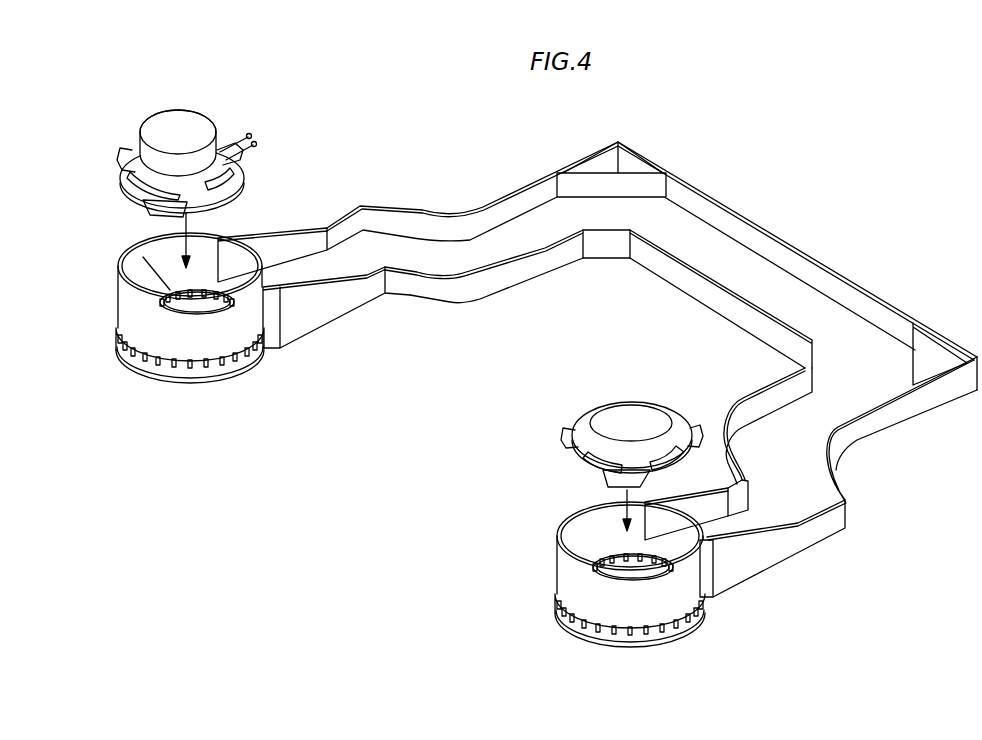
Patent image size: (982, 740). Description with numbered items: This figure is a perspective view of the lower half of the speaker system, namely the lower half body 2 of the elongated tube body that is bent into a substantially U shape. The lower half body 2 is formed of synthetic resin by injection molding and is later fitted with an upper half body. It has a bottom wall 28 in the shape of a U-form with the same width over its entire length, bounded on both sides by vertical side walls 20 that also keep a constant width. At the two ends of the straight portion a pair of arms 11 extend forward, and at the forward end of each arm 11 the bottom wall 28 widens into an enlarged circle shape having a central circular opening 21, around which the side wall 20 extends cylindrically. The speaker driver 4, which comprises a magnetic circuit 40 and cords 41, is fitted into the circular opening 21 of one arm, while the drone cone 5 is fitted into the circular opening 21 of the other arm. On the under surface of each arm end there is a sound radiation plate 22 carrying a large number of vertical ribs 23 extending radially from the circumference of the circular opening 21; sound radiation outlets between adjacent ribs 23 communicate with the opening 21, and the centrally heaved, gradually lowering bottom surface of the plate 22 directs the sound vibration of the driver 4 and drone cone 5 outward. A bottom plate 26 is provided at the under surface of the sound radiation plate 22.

The lower half body 2 is at (521, 412).
The speaker driver 4 is at (197, 142).
The drone cone 5 is at (630, 422).
The arm 11 is at (328, 327).
The side wall 20 is at (683, 517).
The circular opening 21 is at (170, 290).
The sound radiation plate 22 is at (193, 368).
The vertical rib 23 is at (583, 632).
The bottom plate 26 is at (568, 627).
The bottom wall 28 is at (830, 317).
The magnetic circuit 40 is at (182, 137).
The cords 41 is at (254, 148).